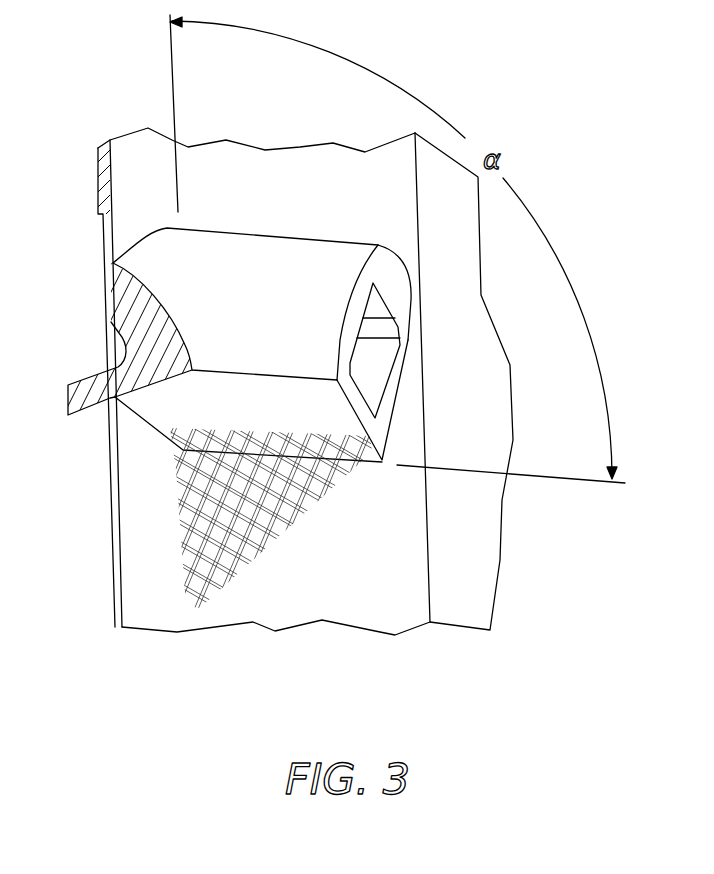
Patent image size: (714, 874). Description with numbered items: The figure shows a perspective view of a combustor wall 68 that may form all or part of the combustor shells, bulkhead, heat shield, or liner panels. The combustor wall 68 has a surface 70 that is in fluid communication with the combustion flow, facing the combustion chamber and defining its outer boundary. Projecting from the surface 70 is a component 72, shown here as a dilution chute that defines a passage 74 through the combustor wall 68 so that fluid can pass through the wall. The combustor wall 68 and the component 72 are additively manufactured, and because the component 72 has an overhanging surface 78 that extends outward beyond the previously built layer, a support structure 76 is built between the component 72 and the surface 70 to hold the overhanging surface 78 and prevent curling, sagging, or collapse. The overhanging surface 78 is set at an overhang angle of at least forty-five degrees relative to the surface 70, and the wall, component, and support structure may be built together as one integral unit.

The combustor wall 68 is at (467, 650).
The surface 70 is at (135, 160).
The component 72 is at (128, 300).
The passage 74 is at (383, 367).
The support structure 76 is at (306, 540).
The overhanging surface 78 is at (383, 466).